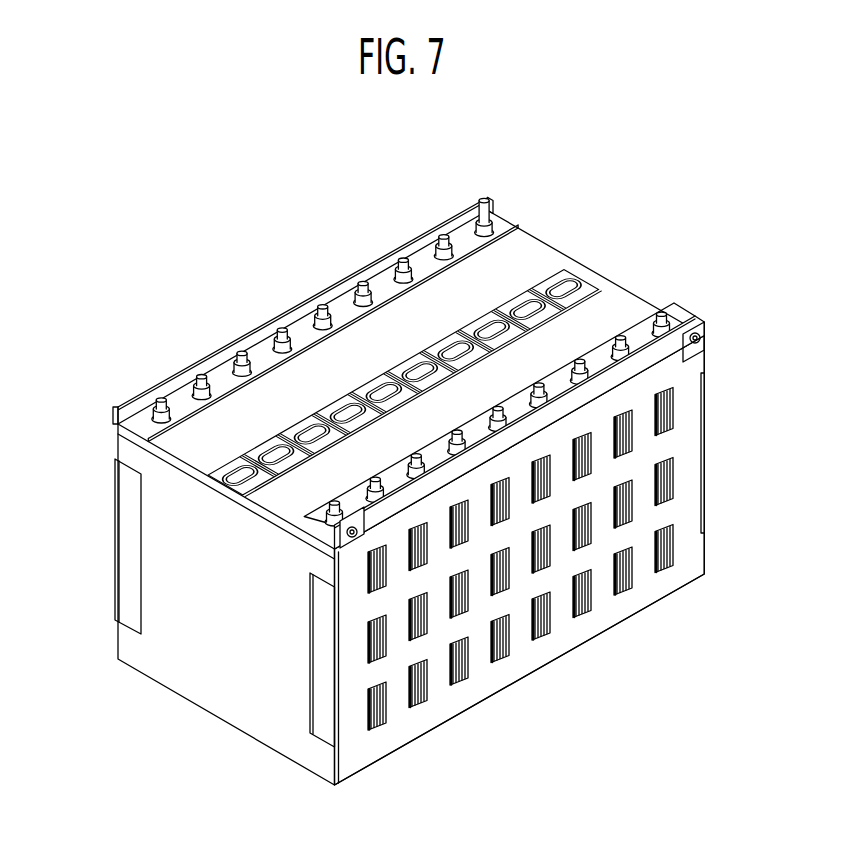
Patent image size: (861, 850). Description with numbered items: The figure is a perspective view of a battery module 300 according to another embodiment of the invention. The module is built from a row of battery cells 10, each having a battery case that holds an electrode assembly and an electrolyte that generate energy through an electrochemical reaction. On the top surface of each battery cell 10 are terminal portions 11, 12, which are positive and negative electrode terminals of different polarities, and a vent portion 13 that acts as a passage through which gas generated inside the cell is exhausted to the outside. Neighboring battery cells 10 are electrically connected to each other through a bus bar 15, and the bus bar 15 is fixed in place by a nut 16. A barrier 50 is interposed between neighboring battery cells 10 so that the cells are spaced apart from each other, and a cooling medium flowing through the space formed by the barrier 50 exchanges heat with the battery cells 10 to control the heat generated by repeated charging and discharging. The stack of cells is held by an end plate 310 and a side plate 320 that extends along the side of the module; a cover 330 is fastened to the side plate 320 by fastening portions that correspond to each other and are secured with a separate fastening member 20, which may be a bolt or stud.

The battery module 300 is at (630, 190).
The end plate 310 is at (185, 675).
The side plate 320 is at (108, 544).
The cover 330 is at (304, 277).
The vent portion 13 is at (573, 290).
The terminal portion 11 is at (490, 197).
The terminal portion 12 is at (661, 311).
The bus bar 15 is at (158, 402).
The nut 16 is at (190, 397).
The fastening member 20 is at (334, 549).
The battery cell 10 is at (470, 665).
The barrier 50 is at (465, 672).